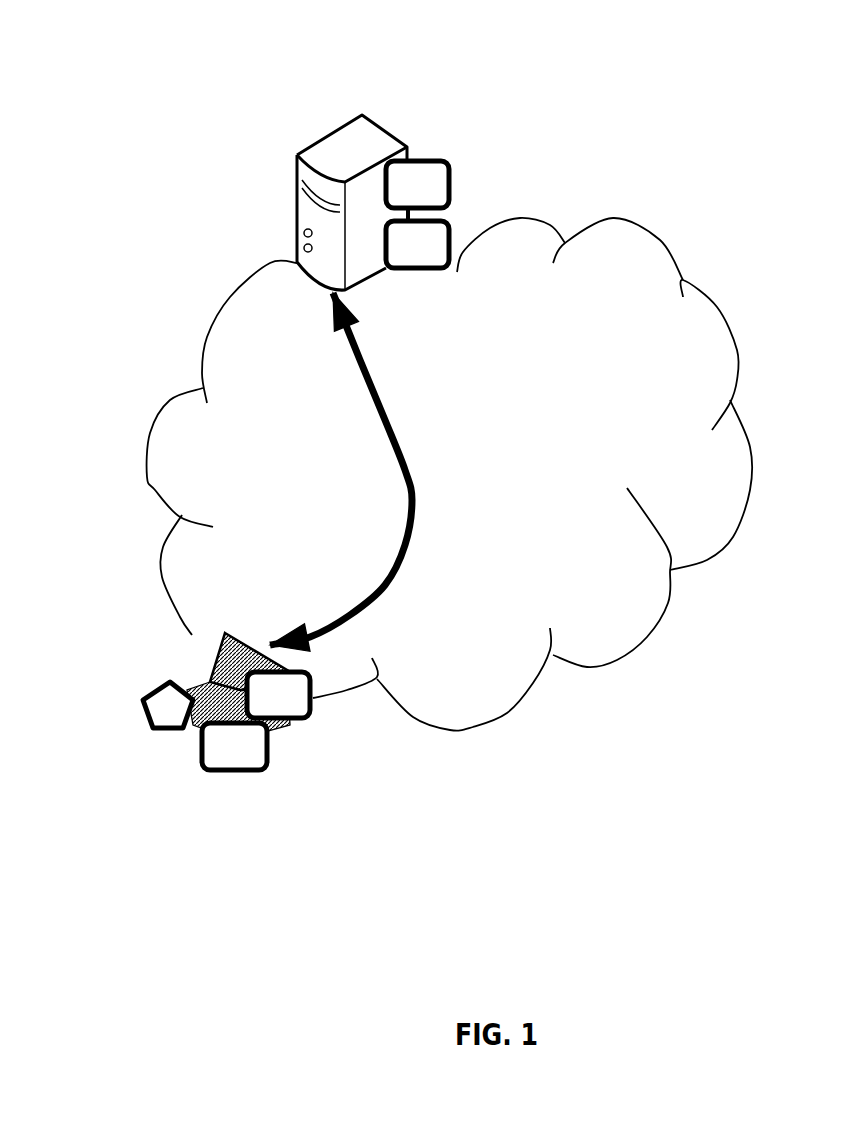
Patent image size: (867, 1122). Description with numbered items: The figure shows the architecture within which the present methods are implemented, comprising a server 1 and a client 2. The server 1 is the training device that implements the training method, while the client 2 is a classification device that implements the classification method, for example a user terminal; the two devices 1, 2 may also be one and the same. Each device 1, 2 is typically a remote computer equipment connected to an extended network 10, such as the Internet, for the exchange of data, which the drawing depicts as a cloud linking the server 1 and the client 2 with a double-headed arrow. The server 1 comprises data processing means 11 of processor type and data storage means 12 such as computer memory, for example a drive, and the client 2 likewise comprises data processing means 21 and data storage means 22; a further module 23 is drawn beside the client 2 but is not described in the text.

The server 1 is at (362, 115).
The extended network 10 is at (212, 288).
The data processing means 11 is at (455, 250).
The data storage means 12 is at (455, 173).
The client 2 is at (207, 658).
The data processing means 21 is at (317, 723).
The data storage means 22 is at (263, 770).
The terminal module 23 is at (145, 725).